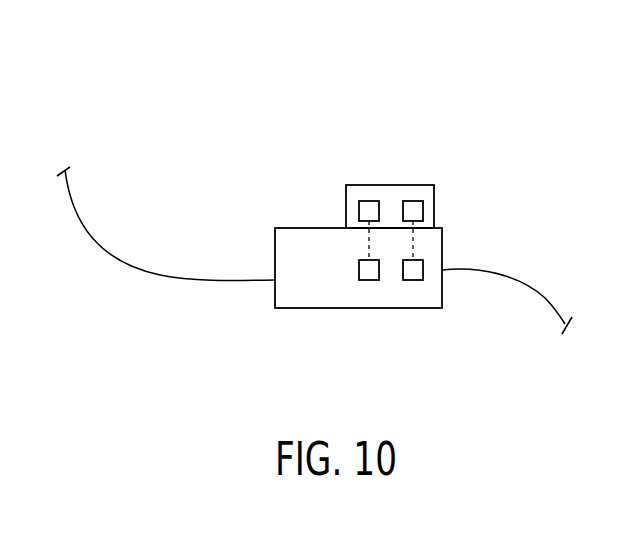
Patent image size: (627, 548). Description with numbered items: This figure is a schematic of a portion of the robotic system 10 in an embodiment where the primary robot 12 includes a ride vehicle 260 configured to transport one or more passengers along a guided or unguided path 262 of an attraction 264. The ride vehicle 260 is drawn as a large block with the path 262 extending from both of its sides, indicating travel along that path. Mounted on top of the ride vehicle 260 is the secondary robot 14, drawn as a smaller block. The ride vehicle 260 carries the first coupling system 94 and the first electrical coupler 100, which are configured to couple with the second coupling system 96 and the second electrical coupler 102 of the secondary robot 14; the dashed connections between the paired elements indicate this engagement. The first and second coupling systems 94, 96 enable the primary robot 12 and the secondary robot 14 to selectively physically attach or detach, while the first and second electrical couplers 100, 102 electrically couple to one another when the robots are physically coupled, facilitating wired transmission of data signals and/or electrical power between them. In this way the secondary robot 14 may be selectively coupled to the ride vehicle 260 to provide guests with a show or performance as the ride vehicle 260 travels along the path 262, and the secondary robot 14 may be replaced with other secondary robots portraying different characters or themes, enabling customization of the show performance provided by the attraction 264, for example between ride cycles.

The robotic system 10 is at (466, 93).
The primary robot 12 is at (319, 288).
The secondary robot 14 is at (390, 185).
The first coupling system 94 is at (413, 280).
The second coupling system 96 is at (423, 213).
The first electrical coupler 100 is at (369, 280).
The second electrical coupler 102 is at (360, 209).
The ride vehicle 260 is at (310, 296).
The path 262 is at (143, 268).
The attraction 264 is at (558, 168).